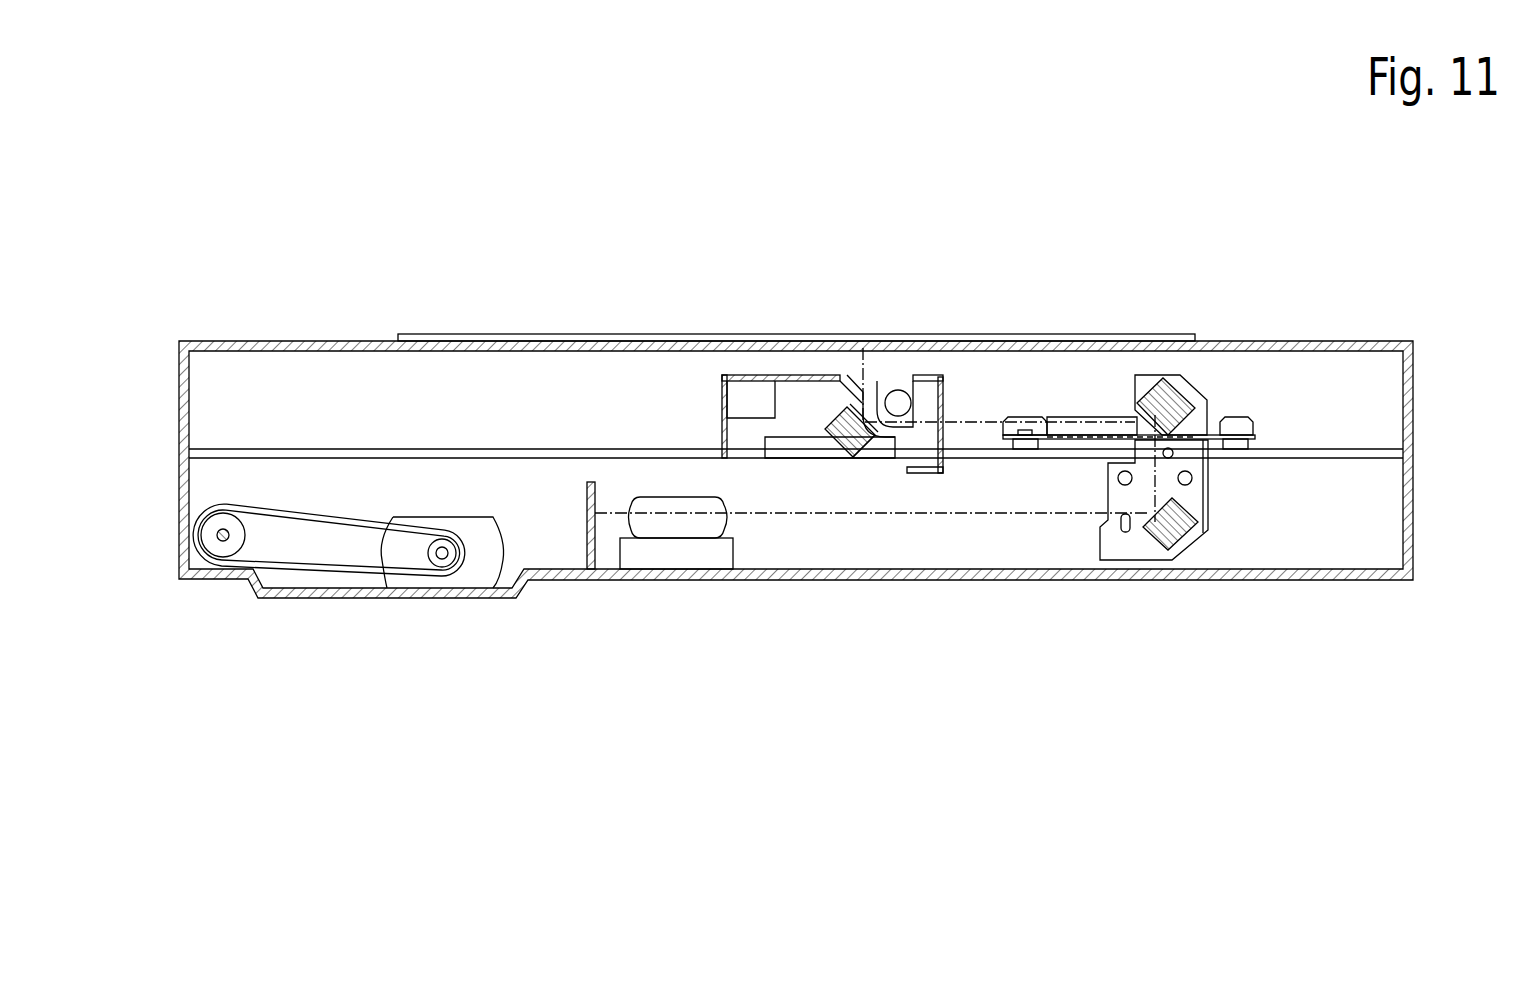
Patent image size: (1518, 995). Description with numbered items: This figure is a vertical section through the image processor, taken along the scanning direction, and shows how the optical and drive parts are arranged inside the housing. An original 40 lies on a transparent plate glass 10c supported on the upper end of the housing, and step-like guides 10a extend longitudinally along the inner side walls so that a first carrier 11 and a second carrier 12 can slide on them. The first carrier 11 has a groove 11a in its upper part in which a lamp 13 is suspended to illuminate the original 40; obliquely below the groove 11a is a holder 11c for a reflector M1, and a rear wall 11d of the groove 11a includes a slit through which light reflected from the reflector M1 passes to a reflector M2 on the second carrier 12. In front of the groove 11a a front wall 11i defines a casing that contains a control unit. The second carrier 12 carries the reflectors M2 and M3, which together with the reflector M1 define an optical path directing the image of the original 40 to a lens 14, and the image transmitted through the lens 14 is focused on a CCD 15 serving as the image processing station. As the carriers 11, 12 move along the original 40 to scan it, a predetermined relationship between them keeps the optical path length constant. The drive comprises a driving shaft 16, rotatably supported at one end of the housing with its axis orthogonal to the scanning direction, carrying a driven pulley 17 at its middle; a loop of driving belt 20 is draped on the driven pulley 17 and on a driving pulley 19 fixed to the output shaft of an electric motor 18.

The transparent plate glass 10c is at (330, 341).
The original 40 is at (450, 334).
The guides 10a is at (357, 458).
The first carrier 11 is at (790, 388).
The front wall 11i is at (717, 428).
The groove 11a is at (882, 412).
The holder 11c is at (852, 458).
The rear wall 11d is at (945, 407).
The reflector M1 is at (847, 408).
The reflector M2 is at (1135, 400).
The reflector M3 is at (1163, 508).
The second carrier 12 is at (1193, 463).
The lamp 13 is at (903, 390).
The lens 14 is at (707, 523).
The CCD 15 is at (600, 540).
The driving shaft 16 is at (218, 536).
The driven pulley 17 is at (237, 545).
The electric motor 18 is at (473, 527).
The driving pulley 19 is at (443, 567).
The driving belt 20 is at (344, 521).